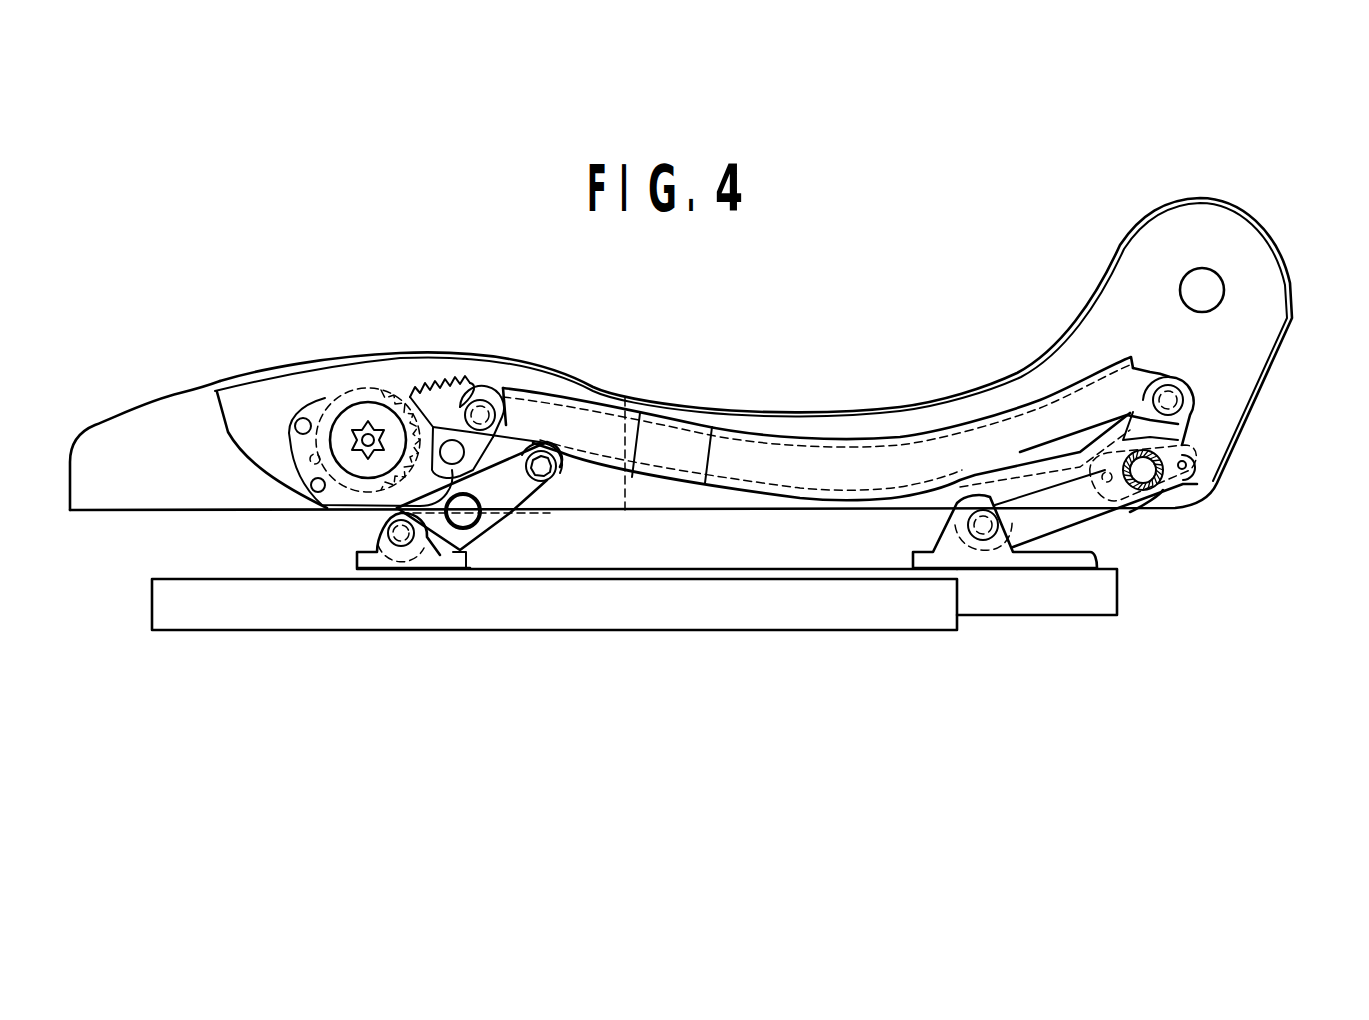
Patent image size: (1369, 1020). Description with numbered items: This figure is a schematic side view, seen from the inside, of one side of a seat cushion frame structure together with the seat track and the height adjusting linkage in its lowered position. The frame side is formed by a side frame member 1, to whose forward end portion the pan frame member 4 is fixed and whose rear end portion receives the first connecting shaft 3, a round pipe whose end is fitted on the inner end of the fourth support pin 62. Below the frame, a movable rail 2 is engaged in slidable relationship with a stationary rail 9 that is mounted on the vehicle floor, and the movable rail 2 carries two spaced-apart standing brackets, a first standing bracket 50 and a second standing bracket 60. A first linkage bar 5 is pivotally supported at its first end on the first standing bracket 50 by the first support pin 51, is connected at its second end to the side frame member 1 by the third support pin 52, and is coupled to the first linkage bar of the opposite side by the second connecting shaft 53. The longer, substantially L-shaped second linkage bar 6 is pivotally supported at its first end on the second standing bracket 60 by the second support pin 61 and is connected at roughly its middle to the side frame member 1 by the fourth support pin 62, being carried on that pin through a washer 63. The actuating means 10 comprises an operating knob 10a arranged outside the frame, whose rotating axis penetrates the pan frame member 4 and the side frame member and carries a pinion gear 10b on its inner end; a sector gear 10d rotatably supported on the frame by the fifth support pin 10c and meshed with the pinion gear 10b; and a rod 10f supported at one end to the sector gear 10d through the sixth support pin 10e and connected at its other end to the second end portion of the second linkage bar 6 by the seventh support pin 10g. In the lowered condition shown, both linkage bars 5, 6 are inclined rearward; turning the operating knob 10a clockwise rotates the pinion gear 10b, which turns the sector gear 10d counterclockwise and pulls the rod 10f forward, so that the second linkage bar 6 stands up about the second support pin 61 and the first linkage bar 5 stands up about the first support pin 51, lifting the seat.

The side frame member 1 is at (902, 410).
The movable rail 2 is at (1053, 607).
The first connecting shaft 3 is at (1155, 497).
The pan frame member 4 is at (162, 393).
The first linkage bar 5 is at (487, 534).
The second linkage bar 6 is at (1090, 520).
The stationary rail 9 is at (706, 620).
The actuating means 10 is at (438, 381).
The operating knob 10a is at (365, 393).
The pinion gear 10b is at (287, 403).
The fifth support pin 10c is at (543, 482).
The sector gear 10d is at (458, 383).
The sixth support pin 10e is at (483, 413).
The rod 10f is at (804, 435).
The seventh support pin 10g is at (1172, 400).
The first standing bracket 50 is at (345, 531).
The first support pin 51 is at (401, 536).
The third support pin 52 is at (546, 470).
The second connecting shaft 53 is at (462, 515).
The second standing bracket 60 is at (913, 552).
The second support pin 61 is at (992, 527).
The fourth support pin 62 is at (1143, 472).
The washer 63 is at (1196, 456).